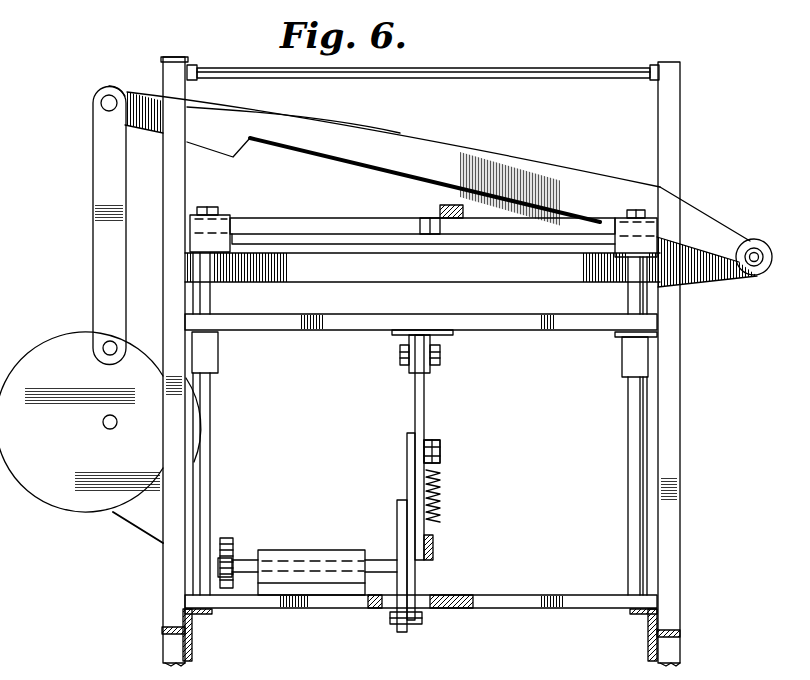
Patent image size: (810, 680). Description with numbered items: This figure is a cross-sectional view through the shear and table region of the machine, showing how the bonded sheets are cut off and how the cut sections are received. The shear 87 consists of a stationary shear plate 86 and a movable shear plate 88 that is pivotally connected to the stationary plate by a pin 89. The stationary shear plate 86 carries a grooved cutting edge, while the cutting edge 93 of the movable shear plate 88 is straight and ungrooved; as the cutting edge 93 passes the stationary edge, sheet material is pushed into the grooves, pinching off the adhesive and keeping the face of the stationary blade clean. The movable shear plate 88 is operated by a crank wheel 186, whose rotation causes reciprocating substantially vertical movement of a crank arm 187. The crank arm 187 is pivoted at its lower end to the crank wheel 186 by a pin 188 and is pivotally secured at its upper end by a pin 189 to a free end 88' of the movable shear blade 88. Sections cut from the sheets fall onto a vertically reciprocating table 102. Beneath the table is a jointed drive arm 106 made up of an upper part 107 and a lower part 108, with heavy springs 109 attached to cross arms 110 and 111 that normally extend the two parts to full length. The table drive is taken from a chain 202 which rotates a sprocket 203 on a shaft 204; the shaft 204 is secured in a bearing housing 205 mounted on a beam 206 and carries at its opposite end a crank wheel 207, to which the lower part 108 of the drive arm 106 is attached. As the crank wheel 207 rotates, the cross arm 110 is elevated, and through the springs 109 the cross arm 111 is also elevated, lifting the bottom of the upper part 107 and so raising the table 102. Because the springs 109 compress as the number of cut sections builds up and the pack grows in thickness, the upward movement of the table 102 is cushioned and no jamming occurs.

The stationary shear plate 86 is at (493, 280).
The shear 87 is at (708, 203).
The movable shear plate 88 is at (392, 159).
The free end of the movable shear blade 88' is at (126, 80).
The pin 89 is at (756, 252).
The cutting edge 93 is at (290, 152).
The vertically reciprocating table 102 is at (342, 330).
The jointed drive arm 106 is at (447, 450).
The upper part 107 is at (425, 388).
The lower part 108 is at (407, 441).
The heavy springs 109 is at (440, 497).
The cross arm 110 is at (434, 440).
The cross arm 111 is at (433, 550).
The crank wheel 186 is at (68, 492).
The crank arm 187 is at (108, 262).
The pin 188 is at (108, 341).
The pin 189 is at (101, 102).
The chain 202 is at (232, 552).
The sprocket 203 is at (226, 538).
The shaft 204 is at (247, 560).
The bearing housing 205 is at (345, 552).
The beam 206 is at (330, 603).
The crank wheel 207 is at (403, 576).